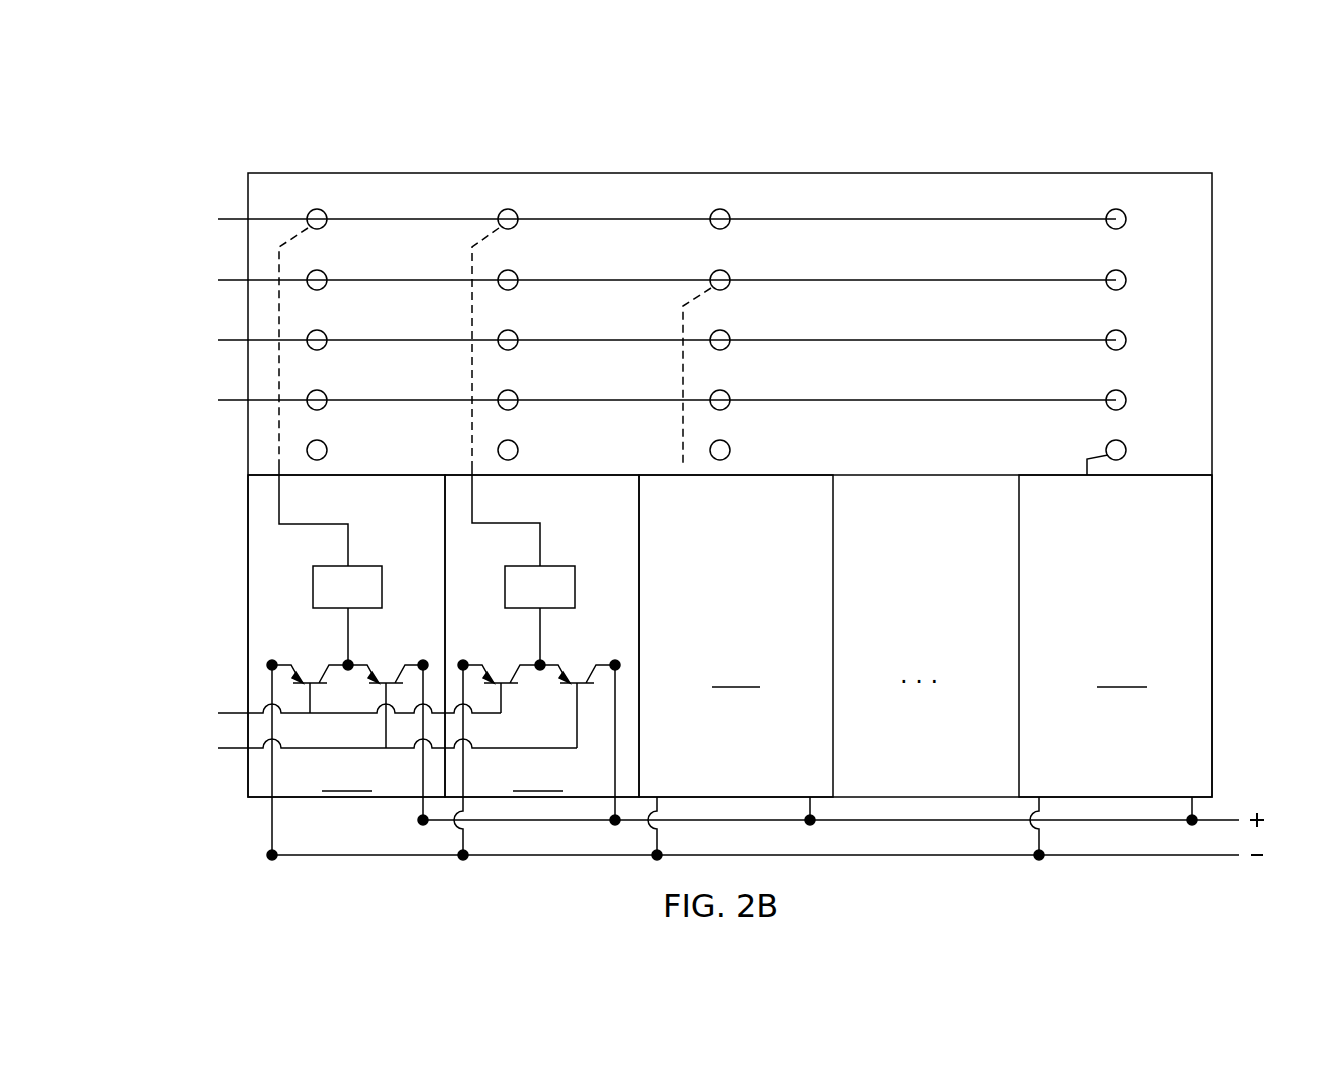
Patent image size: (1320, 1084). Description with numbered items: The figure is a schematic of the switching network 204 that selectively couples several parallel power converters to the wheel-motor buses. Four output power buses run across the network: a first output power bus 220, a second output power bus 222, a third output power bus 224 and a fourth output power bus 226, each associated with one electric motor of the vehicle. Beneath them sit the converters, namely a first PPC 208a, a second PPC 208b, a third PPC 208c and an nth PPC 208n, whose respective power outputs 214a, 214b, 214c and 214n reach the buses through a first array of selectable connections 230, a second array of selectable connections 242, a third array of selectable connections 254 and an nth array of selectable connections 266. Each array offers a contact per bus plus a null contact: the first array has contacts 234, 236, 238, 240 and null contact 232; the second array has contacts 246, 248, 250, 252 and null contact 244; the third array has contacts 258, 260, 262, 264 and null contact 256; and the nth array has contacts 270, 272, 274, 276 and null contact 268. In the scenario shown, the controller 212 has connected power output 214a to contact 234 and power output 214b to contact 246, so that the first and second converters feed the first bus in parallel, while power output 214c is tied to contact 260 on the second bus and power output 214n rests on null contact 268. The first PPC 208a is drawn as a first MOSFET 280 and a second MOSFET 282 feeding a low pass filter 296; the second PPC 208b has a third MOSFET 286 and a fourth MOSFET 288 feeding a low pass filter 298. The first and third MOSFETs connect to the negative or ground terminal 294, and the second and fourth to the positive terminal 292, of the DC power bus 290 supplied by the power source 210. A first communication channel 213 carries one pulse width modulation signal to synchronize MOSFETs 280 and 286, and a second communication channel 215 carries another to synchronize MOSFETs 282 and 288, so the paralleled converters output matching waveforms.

The switching network 204 is at (865, 173).
The first output power bus 220 is at (218, 219).
The second output power bus 222 is at (218, 280).
The third output power bus 224 is at (218, 340).
The fourth output power bus 226 is at (218, 400).
The first array of selectable connections 230 is at (300, 160).
The second array of selectable connections 242 is at (490, 160).
The third array of selectable connections 254 is at (702, 160).
The nth array of selectable connections 266 is at (1095, 160).
The null contact 232 is at (324, 443).
The first contact 234 is at (324, 212).
The second contact 236 is at (324, 273).
The third contact 238 is at (324, 333).
The fourth contact 240 is at (324, 393).
The null contact 244 is at (515, 443).
The first contact 246 is at (515, 212).
The second contact 248 is at (515, 273).
The third contact 250 is at (515, 333).
The fourth contact 252 is at (515, 393).
The null contact 256 is at (727, 443).
The first contact 258 is at (727, 212).
The second contact 260 is at (727, 273).
The third contact 262 is at (727, 333).
The fourth contact 264 is at (727, 393).
The null contact 268 is at (1109, 443).
The first contact 270 is at (1109, 212).
The second contact 272 is at (1109, 273).
The third contact 274 is at (1109, 333).
The fourth contact 276 is at (1109, 393).
The power output 214a is at (282, 463).
The power output 214b is at (475, 463).
The power output 214c is at (686, 463).
The power output 214n is at (1089, 468).
The first PPC 208a is at (346, 665).
The second PPC 208b is at (542, 665).
The third PPC 208c is at (736, 665).
The nth PPC 208n is at (1115, 665).
The low pass filter 296 is at (382, 578).
The low pass filter 298 is at (575, 578).
The first MOSFET 280 is at (310, 662).
The second MOSFET 282 is at (386, 662).
The third MOSFET 286 is at (500, 662).
The fourth MOSFET 288 is at (577, 662).
The controller 212 is at (218, 729).
The first communication channel 213 is at (218, 713).
The second communication channel 215 is at (218, 748).
The DC power bus 290 is at (228, 836).
The positive terminal 292 is at (878, 820).
The negative or ground terminal 294 is at (858, 855).
The power source 210 is at (1258, 786).